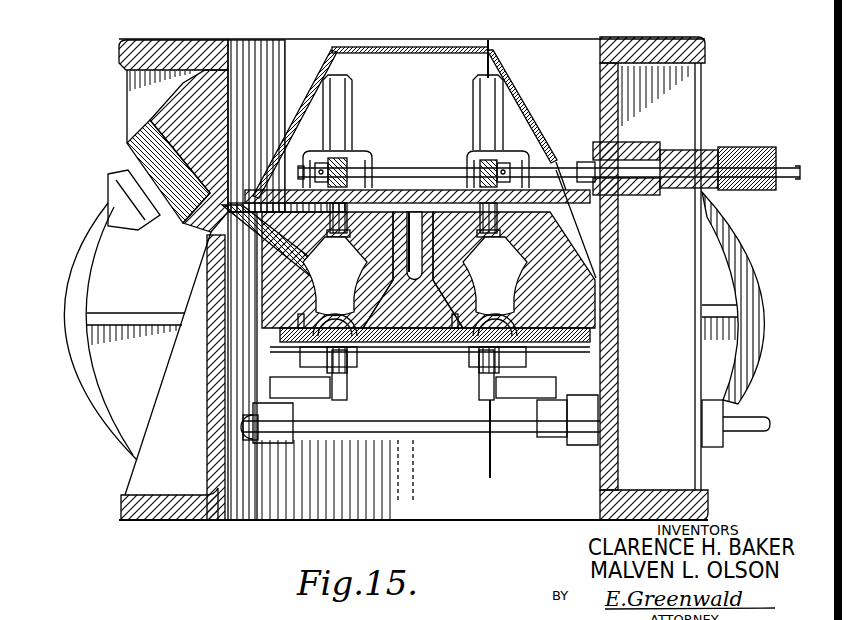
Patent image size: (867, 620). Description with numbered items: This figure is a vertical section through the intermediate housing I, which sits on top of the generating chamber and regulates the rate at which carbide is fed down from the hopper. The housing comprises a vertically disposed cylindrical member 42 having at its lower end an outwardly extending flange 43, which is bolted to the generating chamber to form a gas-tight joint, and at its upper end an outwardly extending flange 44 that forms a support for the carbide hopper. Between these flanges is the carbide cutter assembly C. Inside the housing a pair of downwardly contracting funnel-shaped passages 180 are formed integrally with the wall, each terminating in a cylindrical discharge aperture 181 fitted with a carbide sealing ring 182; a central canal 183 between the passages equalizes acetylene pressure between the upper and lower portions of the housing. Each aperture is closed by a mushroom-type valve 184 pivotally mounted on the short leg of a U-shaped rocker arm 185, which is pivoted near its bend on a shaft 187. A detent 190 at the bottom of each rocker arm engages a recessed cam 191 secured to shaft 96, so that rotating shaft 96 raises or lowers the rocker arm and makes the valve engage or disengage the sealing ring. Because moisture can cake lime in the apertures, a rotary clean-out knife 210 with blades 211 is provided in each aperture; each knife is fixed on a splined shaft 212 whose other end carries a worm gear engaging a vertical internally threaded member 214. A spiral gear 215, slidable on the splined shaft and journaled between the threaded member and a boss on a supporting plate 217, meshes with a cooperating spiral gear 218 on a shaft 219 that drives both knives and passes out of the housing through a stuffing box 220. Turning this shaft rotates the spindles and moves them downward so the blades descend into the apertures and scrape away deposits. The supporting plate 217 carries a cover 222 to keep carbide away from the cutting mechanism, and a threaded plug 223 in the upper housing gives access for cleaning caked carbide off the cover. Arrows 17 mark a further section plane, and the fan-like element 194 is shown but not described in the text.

The cylindrical member 42 is at (212, 400).
The outwardly extending flange 43 is at (155, 514).
The outwardly extending flange 44 is at (652, 45).
The shaft 96 is at (448, 432).
The funnel-shaped passage 180 is at (582, 249).
The discharge aperture 181 is at (366, 344).
The carbide sealing ring 182 is at (305, 322).
The central canal 183 is at (419, 238).
The mushroom-type valve 184 is at (356, 352).
The U-shaped rocker arm 185 is at (342, 385).
The shaft 187 is at (345, 376).
The detent 190 is at (272, 412).
The recessed cam 191 is at (262, 436).
The fan blade 194 is at (78, 360).
The rotary clean-out knife 210 is at (330, 241).
The blade 211 is at (312, 262).
The splined shaft 212 is at (348, 216).
The internally threaded member 214 is at (342, 97).
The spiral gear 215 is at (360, 165).
The supporting plate 217 is at (435, 194).
The spiral gear 218 is at (335, 162).
The shaft 219 is at (420, 170).
The stuffing box 220 is at (733, 150).
The cover 222 is at (443, 47).
The threaded plug 223 is at (132, 197).
The section line 17- 17 is at (494, 45).
The carbide cutter assembly C is at (418, 140).
The intermediate housing I is at (116, 106).